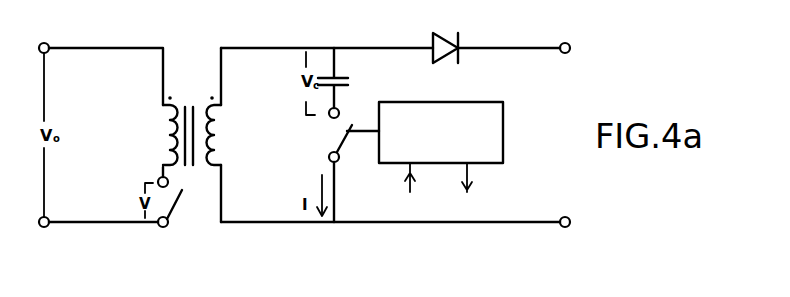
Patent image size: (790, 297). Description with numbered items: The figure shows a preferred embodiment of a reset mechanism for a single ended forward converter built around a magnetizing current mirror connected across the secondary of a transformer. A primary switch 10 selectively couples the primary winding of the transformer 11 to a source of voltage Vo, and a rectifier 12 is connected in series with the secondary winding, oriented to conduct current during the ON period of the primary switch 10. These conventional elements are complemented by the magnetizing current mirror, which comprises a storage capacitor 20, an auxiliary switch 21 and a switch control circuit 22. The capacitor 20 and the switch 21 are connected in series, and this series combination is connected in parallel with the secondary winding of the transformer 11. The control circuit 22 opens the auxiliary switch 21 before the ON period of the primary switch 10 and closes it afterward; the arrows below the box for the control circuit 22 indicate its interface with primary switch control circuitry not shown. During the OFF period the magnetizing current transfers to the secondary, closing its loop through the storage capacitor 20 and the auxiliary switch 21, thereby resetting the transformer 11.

The primary switch 10 is at (183, 193).
The transformer 11 is at (187, 102).
The rectifier 12 is at (459, 36).
The storage capacitor 20 is at (350, 84).
The auxiliary switch 21 is at (345, 141).
The switch control circuit 22 is at (503, 102).